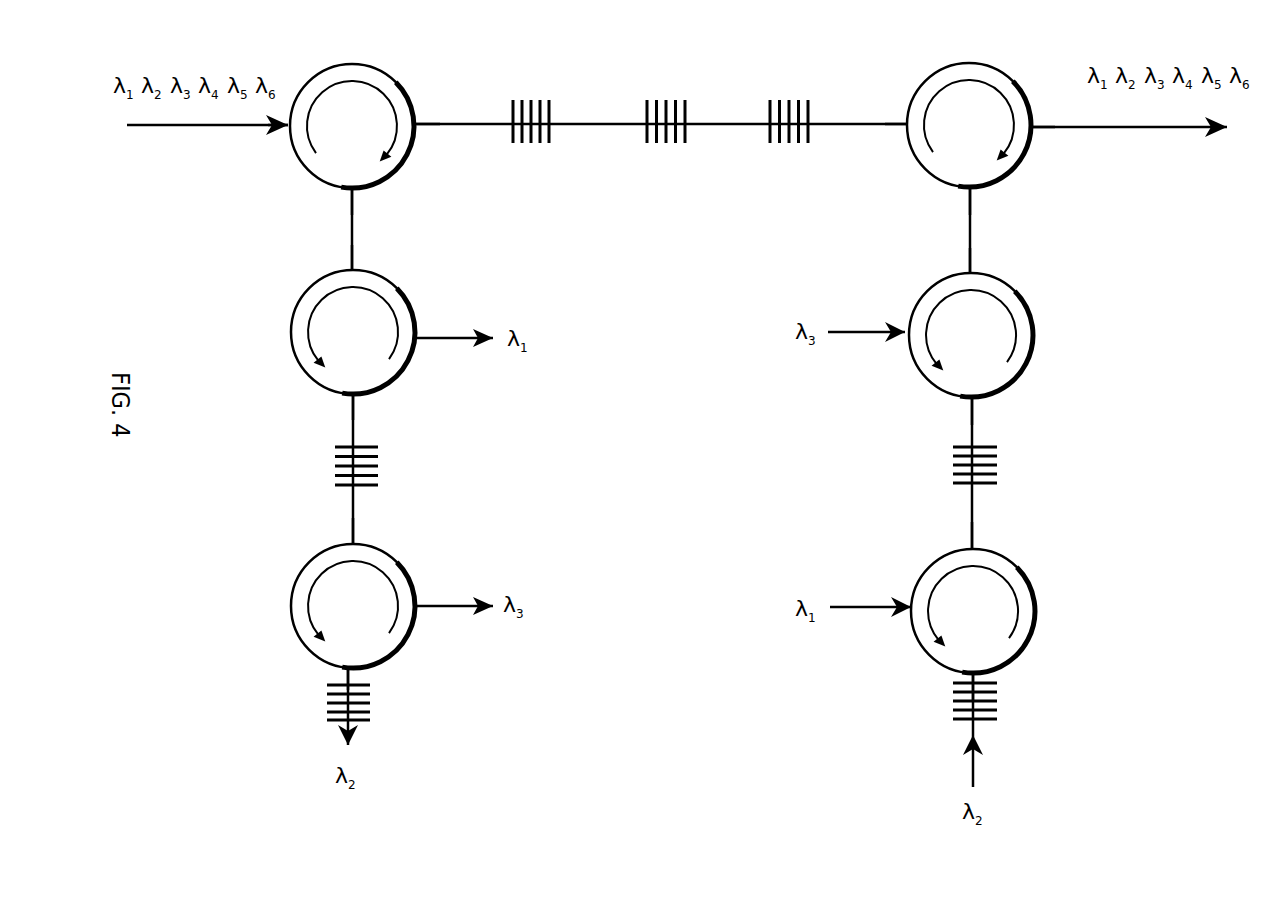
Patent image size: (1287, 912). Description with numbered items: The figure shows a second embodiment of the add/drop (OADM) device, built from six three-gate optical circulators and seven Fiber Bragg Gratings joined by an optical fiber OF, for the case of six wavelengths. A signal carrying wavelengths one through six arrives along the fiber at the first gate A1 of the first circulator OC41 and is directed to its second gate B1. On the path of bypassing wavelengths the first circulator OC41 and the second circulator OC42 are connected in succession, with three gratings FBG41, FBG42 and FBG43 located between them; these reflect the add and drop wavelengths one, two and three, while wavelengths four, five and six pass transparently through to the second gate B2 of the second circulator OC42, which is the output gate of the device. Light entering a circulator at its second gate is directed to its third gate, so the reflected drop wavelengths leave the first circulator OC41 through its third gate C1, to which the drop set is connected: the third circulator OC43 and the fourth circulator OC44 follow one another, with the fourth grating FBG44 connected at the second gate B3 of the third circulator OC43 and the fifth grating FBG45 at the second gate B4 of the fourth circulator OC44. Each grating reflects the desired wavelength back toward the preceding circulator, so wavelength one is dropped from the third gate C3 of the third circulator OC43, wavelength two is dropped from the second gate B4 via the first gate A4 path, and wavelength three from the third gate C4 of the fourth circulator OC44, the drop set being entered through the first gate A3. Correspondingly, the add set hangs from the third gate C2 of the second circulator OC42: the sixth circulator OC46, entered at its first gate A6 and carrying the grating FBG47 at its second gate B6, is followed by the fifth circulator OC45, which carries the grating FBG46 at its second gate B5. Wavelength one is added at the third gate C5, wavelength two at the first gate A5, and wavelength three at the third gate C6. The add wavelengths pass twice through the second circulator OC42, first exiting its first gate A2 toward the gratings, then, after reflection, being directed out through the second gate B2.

The first circulator OC41 is at (322, 102).
The second circulator OC42 is at (969, 102).
The third circulator OC43 is at (316, 332).
The fourth circulator OC44 is at (318, 606).
The fifth circulator OC45 is at (1011, 611).
The sixth circulator OC46 is at (1008, 335).
The optical fiber OF is at (443, 117).
The Fiber Bragg Grating FBG41 is at (540, 95).
The Fiber Bragg Grating FBG42 is at (667, 95).
The Fiber Bragg Grating FBG43 is at (792, 95).
The fourth grating FBG44 is at (412, 466).
The fifth grating FBG45 is at (408, 703).
The Fiber Bragg Grating FBG46 is at (1030, 701).
The Fiber Bragg Grating FBG47 is at (1029, 465).
The first gate A1 is at (270, 146).
The second gate B1 is at (433, 146).
The third gate C1 is at (374, 208).
The first gate A2 is at (888, 141).
The second gate B2 is at (1049, 147).
The third gate C2 is at (989, 204).
The first gate A3 is at (335, 254).
The second gate B3 is at (335, 413).
The third gate C3 is at (454, 323).
The first gate A4 is at (335, 526).
The second gate B4 is at (316, 675).
The third gate C4 is at (454, 589).
The first gate A5 is at (948, 685).
The second gate B5 is at (991, 531).
The third gate C5 is at (870, 588).
The first gate A6 is at (956, 414).
The second gate B6 is at (989, 262).
The third gate C6 is at (866, 316).